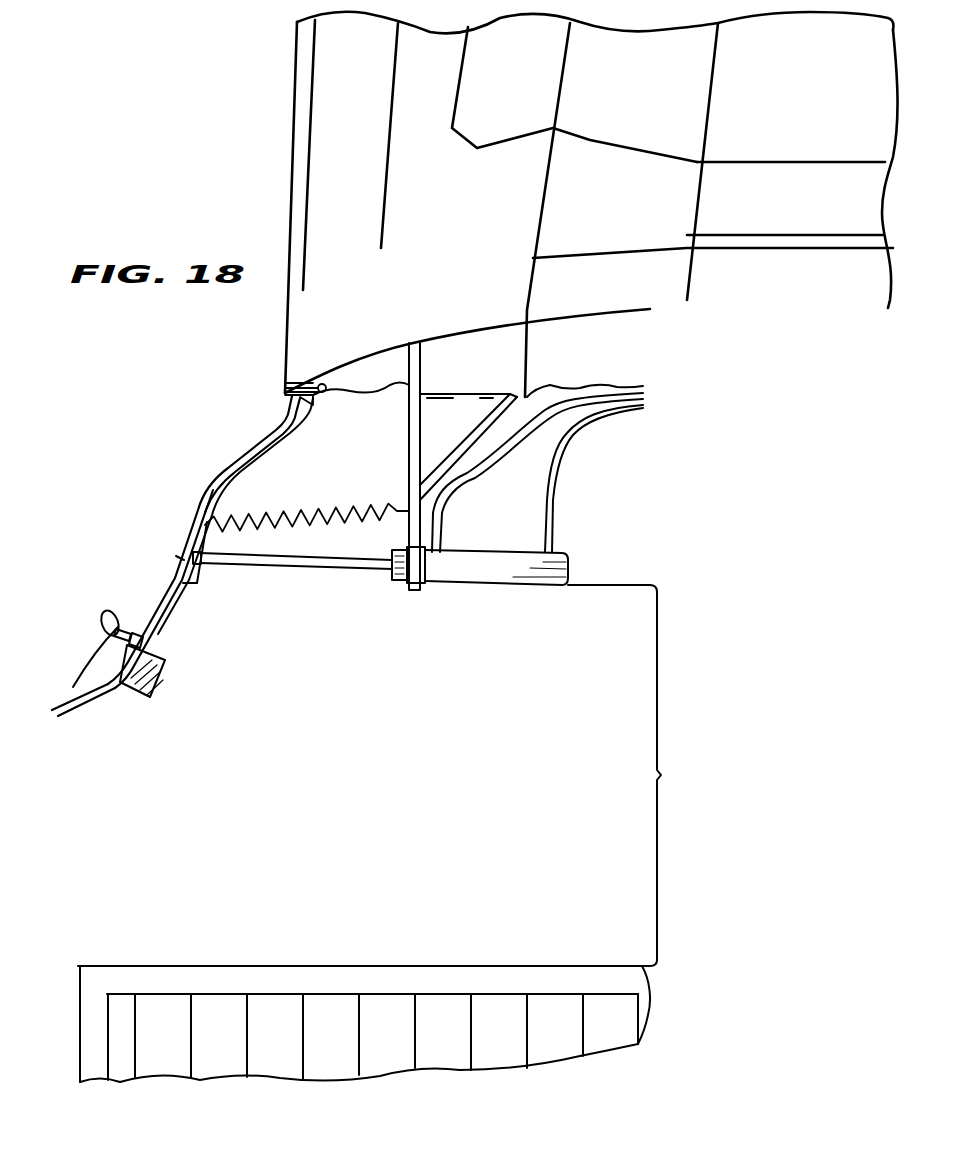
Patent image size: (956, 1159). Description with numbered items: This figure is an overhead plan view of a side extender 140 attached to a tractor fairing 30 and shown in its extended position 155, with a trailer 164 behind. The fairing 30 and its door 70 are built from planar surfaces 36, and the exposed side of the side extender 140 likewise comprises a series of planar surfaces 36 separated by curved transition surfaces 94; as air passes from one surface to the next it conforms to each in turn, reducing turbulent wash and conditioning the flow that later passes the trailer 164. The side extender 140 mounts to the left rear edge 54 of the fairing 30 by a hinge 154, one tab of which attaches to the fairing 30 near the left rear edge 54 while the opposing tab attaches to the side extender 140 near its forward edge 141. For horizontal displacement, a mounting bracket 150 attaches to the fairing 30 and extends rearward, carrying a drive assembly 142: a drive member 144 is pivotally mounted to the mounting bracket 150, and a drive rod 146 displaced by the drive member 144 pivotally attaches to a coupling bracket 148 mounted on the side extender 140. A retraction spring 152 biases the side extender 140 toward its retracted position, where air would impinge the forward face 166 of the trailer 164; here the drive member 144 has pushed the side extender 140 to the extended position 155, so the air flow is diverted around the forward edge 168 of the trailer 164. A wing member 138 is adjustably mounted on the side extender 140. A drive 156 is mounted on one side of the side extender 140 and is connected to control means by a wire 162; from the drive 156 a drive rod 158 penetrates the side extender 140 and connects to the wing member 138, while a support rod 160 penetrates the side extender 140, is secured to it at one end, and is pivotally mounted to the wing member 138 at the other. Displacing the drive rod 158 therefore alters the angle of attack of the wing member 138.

The fairing 30 is at (285, 170).
The door 70 is at (500, 94).
The planar surface 36 is at (253, 443).
The left rear edge 54 is at (285, 382).
The curved transition surfaces 94 is at (283, 412).
The wing member 138 is at (105, 637).
The side extender 140 is at (213, 490).
The forward edge 141 is at (283, 393).
The drive assembly 142 is at (658, 468).
The drive member 144 is at (497, 585).
The drive rod 146 is at (257, 569).
The coupling bracket 148 is at (183, 582).
The mounting bracket 150 is at (409, 448).
The retraction spring 152 is at (315, 512).
The hinge 154 is at (313, 400).
The extended position 155 is at (178, 560).
The drive 156 is at (153, 690).
The drive rod 158 is at (121, 692).
The support rod 160 is at (128, 628).
The wire 162 is at (152, 628).
The trailer 164 is at (428, 942).
The forward face 166 is at (175, 966).
The forward edge 168 is at (78, 966).